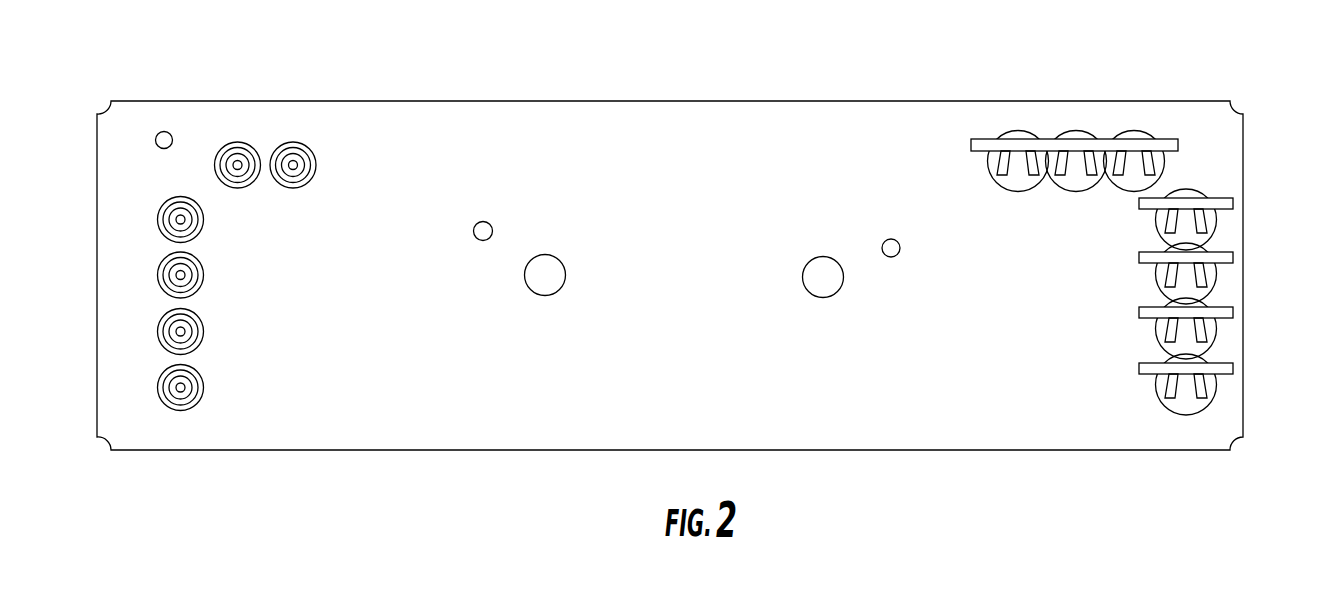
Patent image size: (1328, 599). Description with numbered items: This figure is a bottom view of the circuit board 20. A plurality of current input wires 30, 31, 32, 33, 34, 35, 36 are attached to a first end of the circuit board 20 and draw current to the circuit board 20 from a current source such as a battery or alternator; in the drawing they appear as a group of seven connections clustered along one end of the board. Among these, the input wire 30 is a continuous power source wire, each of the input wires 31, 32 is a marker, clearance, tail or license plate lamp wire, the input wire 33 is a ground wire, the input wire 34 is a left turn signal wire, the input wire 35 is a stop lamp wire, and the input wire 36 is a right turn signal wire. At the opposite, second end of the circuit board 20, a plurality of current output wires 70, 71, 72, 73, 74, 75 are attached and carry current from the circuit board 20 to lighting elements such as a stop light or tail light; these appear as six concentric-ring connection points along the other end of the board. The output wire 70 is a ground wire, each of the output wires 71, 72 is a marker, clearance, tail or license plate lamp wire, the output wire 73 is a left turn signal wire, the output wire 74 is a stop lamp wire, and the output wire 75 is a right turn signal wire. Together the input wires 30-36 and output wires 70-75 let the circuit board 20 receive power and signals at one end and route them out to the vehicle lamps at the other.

The circuit board 20 is at (662, 101).
The input wire 30 is at (1008, 191).
The input wire 31 is at (1076, 191).
The input wire 32 is at (1218, 221).
The input wire 33 is at (1130, 192).
The input wire 34 is at (1218, 281).
The input wire 35 is at (1218, 336).
The input wire 36 is at (1218, 386).
The output wire 70 is at (238, 157).
The output wire 71 is at (299, 153).
The output wire 72 is at (203, 220).
The output wire 73 is at (203, 275).
The output wire 74 is at (203, 332).
The output wire 75 is at (203, 388).